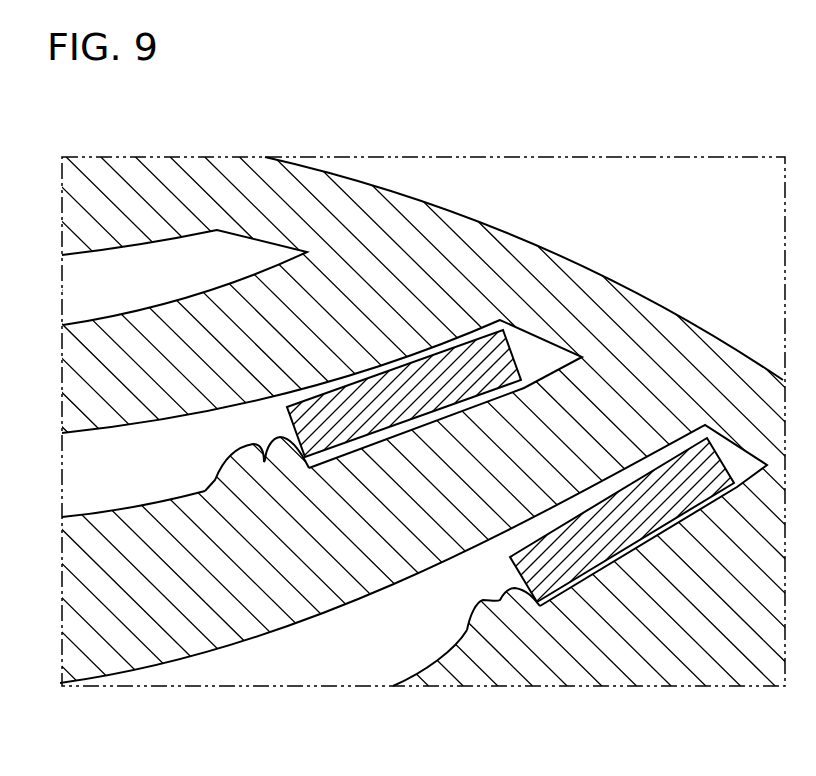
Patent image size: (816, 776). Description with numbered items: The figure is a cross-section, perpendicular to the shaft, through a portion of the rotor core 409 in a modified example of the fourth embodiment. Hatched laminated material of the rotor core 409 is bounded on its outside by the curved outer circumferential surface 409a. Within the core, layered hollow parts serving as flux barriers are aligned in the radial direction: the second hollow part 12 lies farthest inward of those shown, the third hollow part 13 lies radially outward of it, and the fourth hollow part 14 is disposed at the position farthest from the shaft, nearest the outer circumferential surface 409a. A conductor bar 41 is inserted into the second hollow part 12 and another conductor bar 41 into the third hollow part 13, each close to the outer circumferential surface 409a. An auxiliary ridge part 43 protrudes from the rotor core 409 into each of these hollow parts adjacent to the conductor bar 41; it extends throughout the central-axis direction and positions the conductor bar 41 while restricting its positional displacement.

The rotor core 409 is at (360, 215).
The outer circumferential surface 409a is at (522, 238).
The fourth hollow part 14 is at (110, 253).
The third hollow part 13 is at (127, 428).
The second hollow part 12 is at (345, 617).
The conductor bar 41 is at (395, 408).
The auxiliary ridge part 43 is at (222, 458).